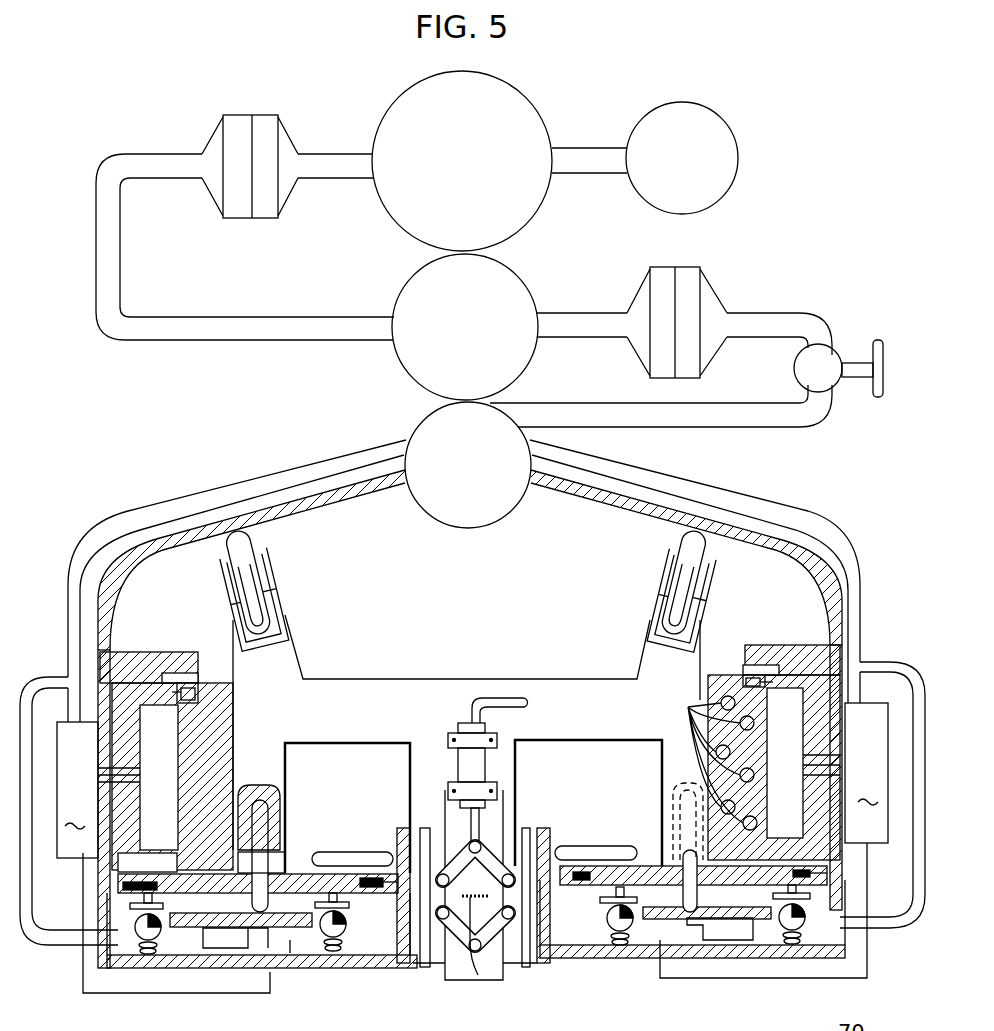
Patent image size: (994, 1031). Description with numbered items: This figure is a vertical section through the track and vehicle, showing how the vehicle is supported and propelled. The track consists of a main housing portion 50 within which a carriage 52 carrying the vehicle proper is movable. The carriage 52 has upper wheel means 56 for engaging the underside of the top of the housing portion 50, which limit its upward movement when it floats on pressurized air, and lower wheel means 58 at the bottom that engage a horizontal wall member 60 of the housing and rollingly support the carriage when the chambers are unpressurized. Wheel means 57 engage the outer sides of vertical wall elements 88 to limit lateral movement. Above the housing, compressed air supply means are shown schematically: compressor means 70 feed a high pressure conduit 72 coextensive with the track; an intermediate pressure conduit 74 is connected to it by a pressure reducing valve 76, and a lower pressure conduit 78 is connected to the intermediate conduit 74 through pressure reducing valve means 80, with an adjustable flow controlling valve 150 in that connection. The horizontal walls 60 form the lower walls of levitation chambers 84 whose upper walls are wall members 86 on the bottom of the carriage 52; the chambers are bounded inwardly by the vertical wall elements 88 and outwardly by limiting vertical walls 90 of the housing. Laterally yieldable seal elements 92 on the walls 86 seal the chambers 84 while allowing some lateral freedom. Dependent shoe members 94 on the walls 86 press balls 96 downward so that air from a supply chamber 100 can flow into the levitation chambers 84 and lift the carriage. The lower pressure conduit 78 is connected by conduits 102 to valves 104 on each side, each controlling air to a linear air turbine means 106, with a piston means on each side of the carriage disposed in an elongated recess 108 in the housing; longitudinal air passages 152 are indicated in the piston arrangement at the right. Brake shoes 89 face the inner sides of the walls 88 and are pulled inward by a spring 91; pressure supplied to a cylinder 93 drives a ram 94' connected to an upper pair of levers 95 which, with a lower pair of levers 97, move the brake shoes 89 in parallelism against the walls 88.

The main housing portion 50 is at (760, 520).
The carriage 52 is at (600, 678).
The upper wheel means 56 is at (258, 536).
The wheel means 57 is at (362, 852).
The wheel means 58 is at (263, 822).
The horizontal wall member 60 is at (290, 952).
The compressor means 70 is at (722, 150).
The high pressure conduit 72 is at (522, 111).
The intermediate pressure conduit 74 is at (511, 288).
The pressure reducing valve 76 is at (280, 122).
The lower pressure conduit 78 is at (478, 524).
The pressure reducing valve means 80 is at (702, 285).
The levitation chambers 84 is at (393, 962).
The wall members 86 is at (345, 872).
The vertical wall elements 88 is at (400, 830).
The brake shoes 89 is at (428, 830).
The limiting vertical walls 90 is at (110, 903).
The spring 91 is at (472, 892).
The laterally yieldable seal elements 92 is at (118, 886).
The cylinder 93 is at (488, 767).
The shoe members 94 is at (470, 863).
The ram 94' is at (463, 827).
The upper pair of levers 95 is at (475, 896).
The balls 96 is at (152, 945).
The lower pair of levers 97 is at (497, 924).
The supply chamber 100 is at (287, 945).
The conduits 102 is at (62, 703).
The valves 104 is at (473, 798).
The air turbine means 106 is at (156, 722).
The elongated recess 108 is at (150, 832).
The valve 150 is at (834, 362).
The air passages 152 is at (701, 760).